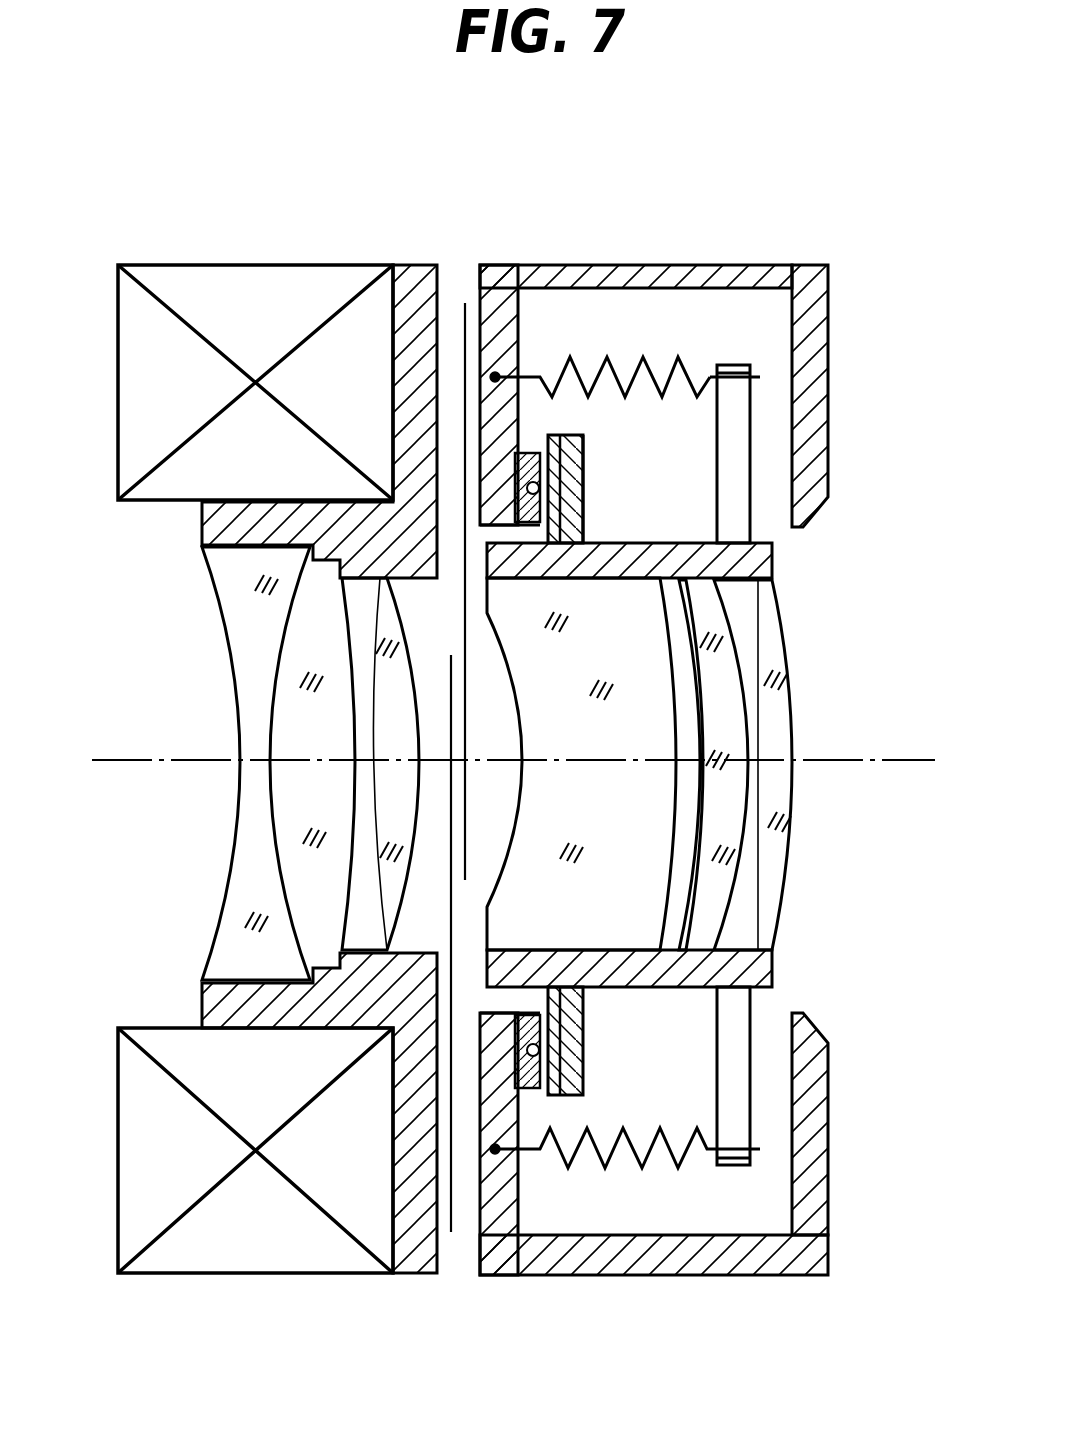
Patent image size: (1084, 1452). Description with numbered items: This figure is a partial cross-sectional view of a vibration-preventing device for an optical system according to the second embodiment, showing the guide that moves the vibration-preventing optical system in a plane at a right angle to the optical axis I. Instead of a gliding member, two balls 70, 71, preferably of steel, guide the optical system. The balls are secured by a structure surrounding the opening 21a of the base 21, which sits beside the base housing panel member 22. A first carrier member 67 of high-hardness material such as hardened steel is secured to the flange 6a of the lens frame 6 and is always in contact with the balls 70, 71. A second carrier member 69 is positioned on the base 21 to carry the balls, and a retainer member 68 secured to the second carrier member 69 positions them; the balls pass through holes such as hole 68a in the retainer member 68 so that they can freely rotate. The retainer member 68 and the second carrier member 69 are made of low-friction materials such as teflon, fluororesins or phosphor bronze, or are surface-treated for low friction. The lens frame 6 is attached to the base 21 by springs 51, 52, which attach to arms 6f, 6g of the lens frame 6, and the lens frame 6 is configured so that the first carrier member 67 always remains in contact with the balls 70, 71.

The base 21 is at (500, 292).
The opening 21a is at (490, 528).
The base housing panel member 22 is at (808, 390).
The lens frame 6 is at (737, 560).
The flange 6a is at (583, 482).
The arm 6f is at (732, 1055).
The arm 6g is at (732, 467).
The spring 51 is at (687, 1157).
The spring 52 is at (690, 367).
The first carrier member 67 is at (548, 435).
The retainer member 68 is at (540, 453).
The hole 68a is at (555, 517).
The second carrier member 69 is at (515, 470).
The ball 70 is at (622, 358).
The ball 71 is at (580, 1085).
The optical axis I is at (124, 760).